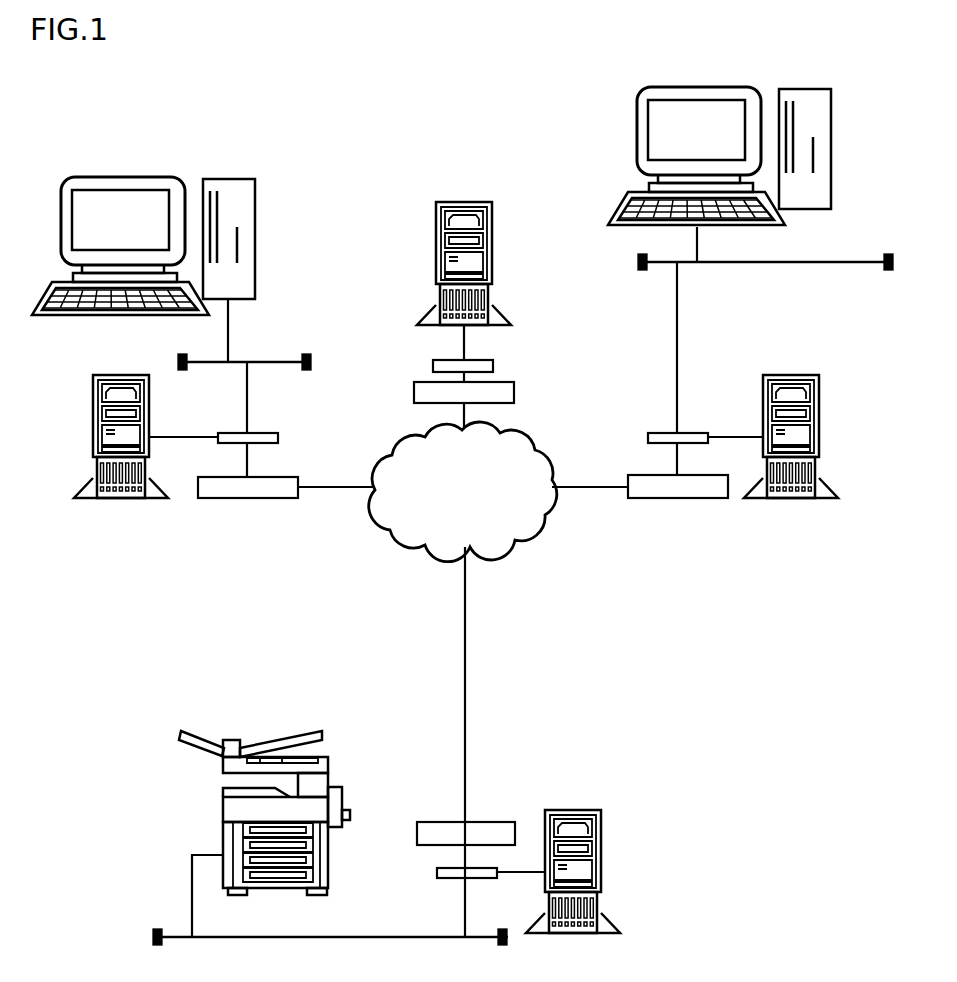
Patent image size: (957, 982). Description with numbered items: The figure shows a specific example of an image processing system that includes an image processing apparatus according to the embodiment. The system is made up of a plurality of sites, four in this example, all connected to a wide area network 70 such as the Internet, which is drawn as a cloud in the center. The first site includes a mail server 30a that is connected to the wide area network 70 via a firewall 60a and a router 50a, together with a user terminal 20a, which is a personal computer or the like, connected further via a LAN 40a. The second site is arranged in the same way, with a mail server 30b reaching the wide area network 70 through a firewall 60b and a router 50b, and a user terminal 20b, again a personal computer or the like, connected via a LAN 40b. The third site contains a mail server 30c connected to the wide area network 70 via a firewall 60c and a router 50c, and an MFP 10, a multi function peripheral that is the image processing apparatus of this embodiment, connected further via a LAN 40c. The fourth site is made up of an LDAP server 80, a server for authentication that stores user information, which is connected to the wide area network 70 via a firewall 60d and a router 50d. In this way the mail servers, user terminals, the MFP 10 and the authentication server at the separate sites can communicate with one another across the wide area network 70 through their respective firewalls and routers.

The MFP 10 is at (231, 740).
The user terminal 20a is at (160, 177).
The user terminal 20b is at (738, 87).
The mail server 30a is at (115, 375).
The mail server 30b is at (803, 375).
The mail server 30c is at (583, 810).
The LAN 40a is at (281, 362).
The LAN 40b is at (869, 262).
The LAN 40c is at (391, 937).
The router 50a is at (269, 433).
The router 50b is at (699, 433).
The router 50c is at (490, 878).
The router 50d is at (494, 366).
The firewall 60a is at (273, 499).
The firewall 60b is at (699, 499).
The firewall 60c is at (488, 822).
The firewall 60d is at (514, 393).
The wide area network 70 is at (509, 540).
The LDAP server 80 is at (475, 202).